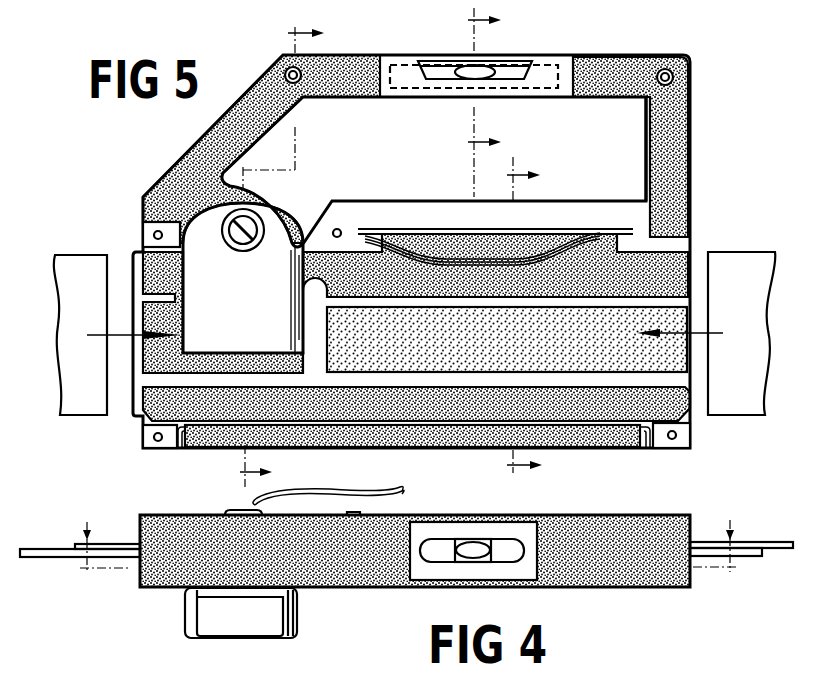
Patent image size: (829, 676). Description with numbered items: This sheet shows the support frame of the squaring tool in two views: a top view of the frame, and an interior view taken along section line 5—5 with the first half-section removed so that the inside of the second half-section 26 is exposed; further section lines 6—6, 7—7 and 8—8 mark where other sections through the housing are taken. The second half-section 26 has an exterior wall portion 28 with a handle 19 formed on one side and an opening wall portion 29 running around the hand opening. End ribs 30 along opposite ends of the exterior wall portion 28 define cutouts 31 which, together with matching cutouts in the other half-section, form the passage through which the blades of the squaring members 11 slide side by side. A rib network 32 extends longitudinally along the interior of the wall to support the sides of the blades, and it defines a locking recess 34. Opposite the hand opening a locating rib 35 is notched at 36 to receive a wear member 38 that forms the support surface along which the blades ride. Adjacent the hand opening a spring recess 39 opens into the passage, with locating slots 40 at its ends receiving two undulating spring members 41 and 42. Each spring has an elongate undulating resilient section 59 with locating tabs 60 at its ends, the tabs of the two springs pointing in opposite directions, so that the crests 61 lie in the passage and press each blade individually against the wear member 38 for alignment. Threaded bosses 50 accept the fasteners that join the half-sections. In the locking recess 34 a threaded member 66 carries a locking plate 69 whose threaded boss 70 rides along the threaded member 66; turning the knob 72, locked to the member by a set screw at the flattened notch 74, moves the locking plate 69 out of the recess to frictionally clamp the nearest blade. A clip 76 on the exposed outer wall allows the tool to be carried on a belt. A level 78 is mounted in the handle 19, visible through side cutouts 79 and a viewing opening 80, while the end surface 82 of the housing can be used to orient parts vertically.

In FIG. 4, the section line 5— 5 is at (408, 528).
In FIG. 5, the section line 6— 6 is at (291, 252).
In FIG. 5, the section line 7— 7 is at (492, 98).
In FIG. 5, the section line 8— 8 is at (532, 321).
In FIG. 5, the squaring members 11 is at (768, 246).
In FIG. 4, the squaring members 11 is at (68, 560).
In FIG. 4, the handle 19 is at (585, 533).
In FIG. 5, the second half-section 26 is at (691, 124).
In FIG. 5, the exterior wall portion 28 is at (651, 291).
In FIG. 5, the opening wall portion 29 is at (648, 145).
In FIG. 5, the end ribs 30 is at (138, 256).
In FIG. 5, the cutouts 31 is at (690, 262).
In FIG. 5, the rib network 32 is at (466, 305).
In FIG. 5, the locking recess 34 is at (172, 366).
In FIG. 5, the locating rib 35 is at (410, 448).
In FIG. 5, the notch 36 is at (190, 448).
In FIG. 5, the wear member 38 is at (352, 418).
In FIG. 5, the spring recess 39 is at (467, 232).
In FIG. 5, the locating slots 40 is at (357, 228).
In FIG. 5, the spring member 41 is at (442, 260).
In FIG. 5, the spring member 42 is at (427, 232).
In FIG. 5, the threaded bosses 50 is at (289, 67).
In FIG. 5, the undulating resilient section 59 is at (537, 263).
In FIG. 5, the locating tabs 60 is at (367, 228).
In FIG. 5, the crests 61 is at (462, 263).
In FIG. 5, the threaded member 66 is at (246, 245).
In FIG. 5, the locking plate 69 is at (252, 341).
In FIG. 5, the threaded boss 70 is at (258, 240).
In FIG. 4, the knob 72 is at (298, 618).
In FIG. 5, the notch 74 is at (223, 222).
In FIG. 5, the clip 76 is at (288, 501).
In FIG. 4, the clip 76 is at (314, 501).
In FIG. 5, the level 78 is at (432, 58).
In FIG. 5, the cutouts 79 is at (530, 61).
In FIG. 4, the cutouts 79 is at (459, 535).
In FIG. 4, the viewing opening 80 is at (508, 535).
In FIG. 4, the end surface 82 is at (139, 576).